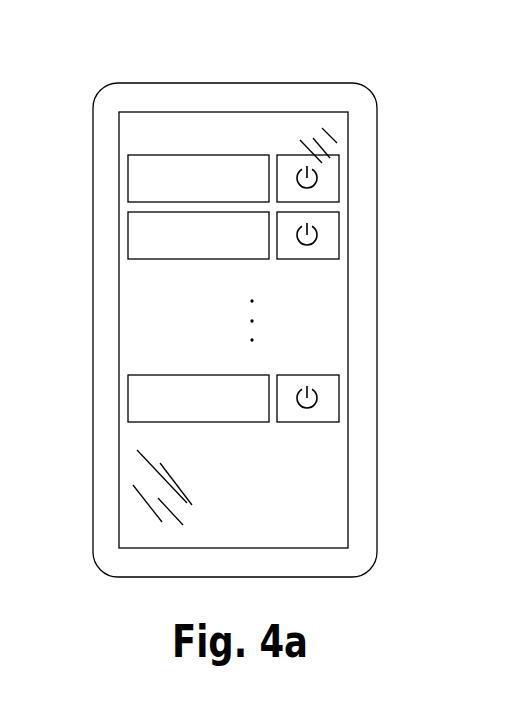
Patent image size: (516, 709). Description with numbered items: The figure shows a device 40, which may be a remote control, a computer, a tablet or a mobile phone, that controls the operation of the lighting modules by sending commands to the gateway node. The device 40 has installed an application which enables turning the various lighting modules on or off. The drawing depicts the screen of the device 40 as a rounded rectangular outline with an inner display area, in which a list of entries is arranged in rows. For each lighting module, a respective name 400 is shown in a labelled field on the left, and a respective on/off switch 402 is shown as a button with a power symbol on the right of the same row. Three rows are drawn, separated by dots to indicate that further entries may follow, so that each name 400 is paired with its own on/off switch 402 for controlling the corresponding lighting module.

The device 40 is at (258, 83).
The name 400 is at (128, 375).
The on/off switch 402 is at (339, 155).